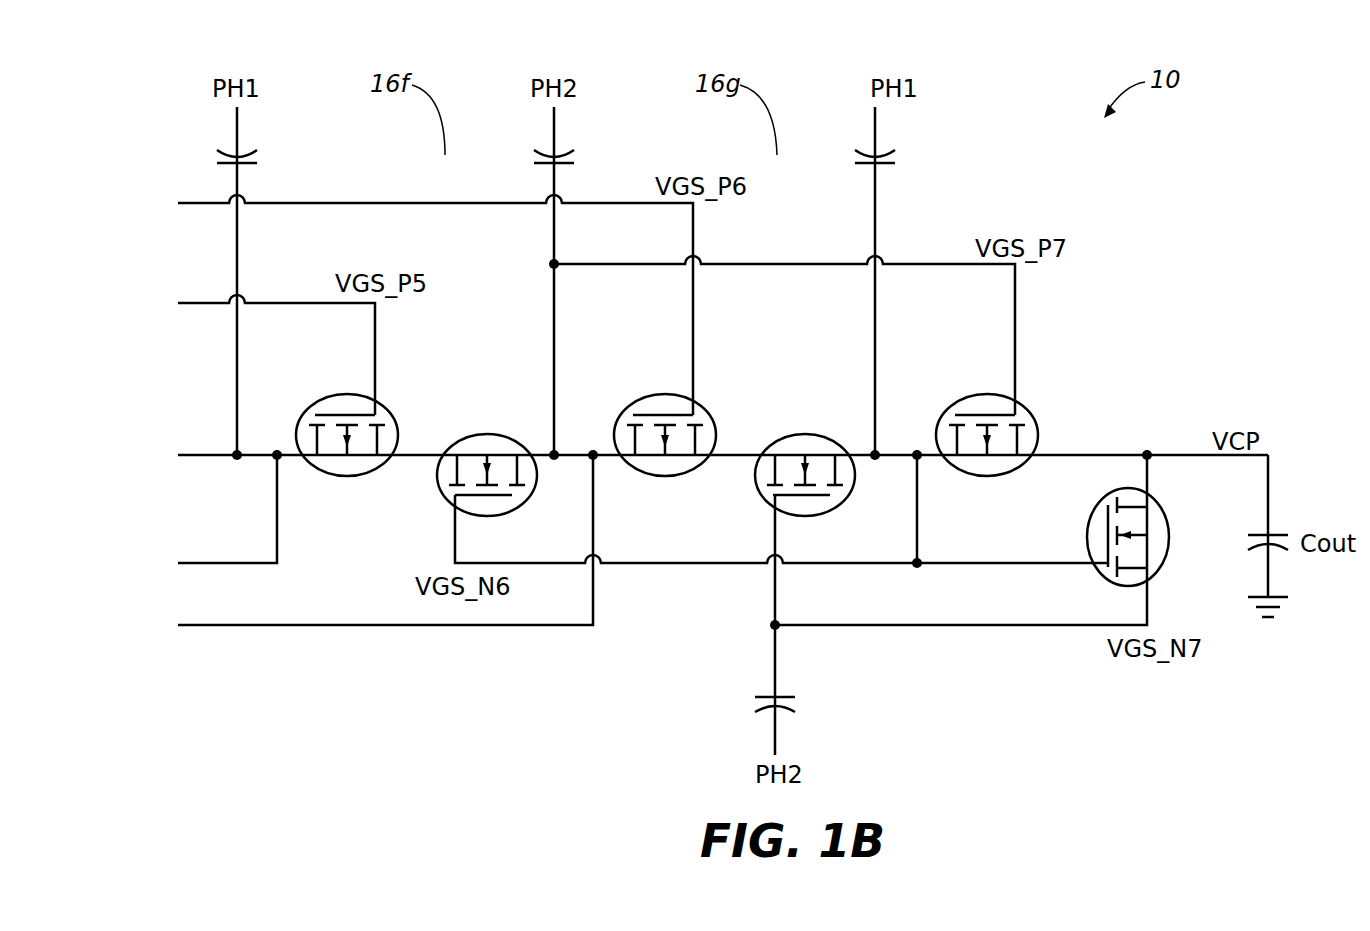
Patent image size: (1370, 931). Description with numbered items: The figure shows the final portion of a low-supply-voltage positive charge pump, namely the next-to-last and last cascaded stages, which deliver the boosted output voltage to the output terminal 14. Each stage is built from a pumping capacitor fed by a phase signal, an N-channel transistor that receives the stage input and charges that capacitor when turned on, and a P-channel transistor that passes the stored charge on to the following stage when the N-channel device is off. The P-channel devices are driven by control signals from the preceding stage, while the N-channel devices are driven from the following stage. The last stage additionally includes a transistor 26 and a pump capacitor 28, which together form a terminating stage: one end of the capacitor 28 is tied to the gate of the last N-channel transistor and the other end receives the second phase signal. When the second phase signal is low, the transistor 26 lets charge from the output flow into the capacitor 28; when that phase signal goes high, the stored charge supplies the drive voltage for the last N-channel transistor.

The output terminal 14 is at (1272, 438).
The transistor 26 is at (1090, 522).
The capacitor 28 is at (796, 697).